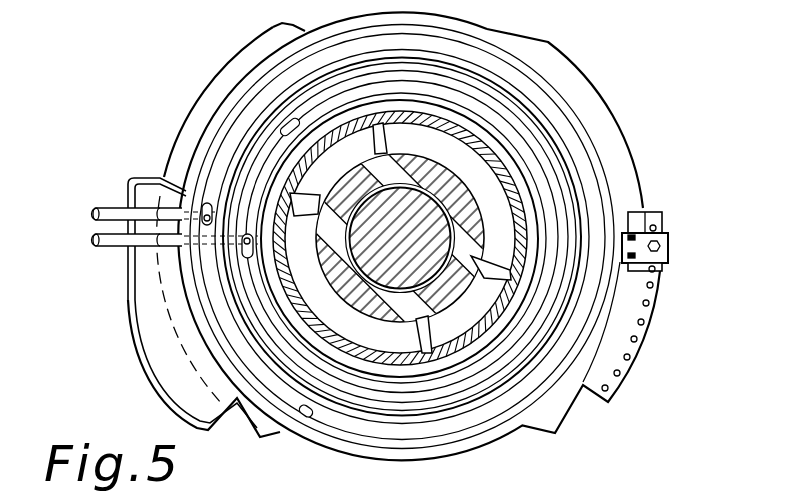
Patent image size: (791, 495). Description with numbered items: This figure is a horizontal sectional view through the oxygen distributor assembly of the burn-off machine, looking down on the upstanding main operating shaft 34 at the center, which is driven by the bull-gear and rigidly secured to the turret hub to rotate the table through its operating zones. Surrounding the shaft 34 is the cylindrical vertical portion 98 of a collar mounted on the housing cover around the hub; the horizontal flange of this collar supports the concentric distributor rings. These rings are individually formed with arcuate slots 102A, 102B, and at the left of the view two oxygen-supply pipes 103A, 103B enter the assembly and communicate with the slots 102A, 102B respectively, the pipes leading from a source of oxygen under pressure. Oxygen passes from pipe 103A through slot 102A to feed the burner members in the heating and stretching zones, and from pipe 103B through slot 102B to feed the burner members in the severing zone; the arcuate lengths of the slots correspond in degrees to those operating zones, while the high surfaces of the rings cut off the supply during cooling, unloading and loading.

The main operating shaft 34 is at (430, 212).
The cylindrical vertical portion 98 is at (425, 117).
The slot 102A is at (307, 416).
The slot 102B is at (275, 154).
The oxygen-supply pipe 103A is at (100, 210).
The oxygen-supply pipe 103B is at (108, 247).